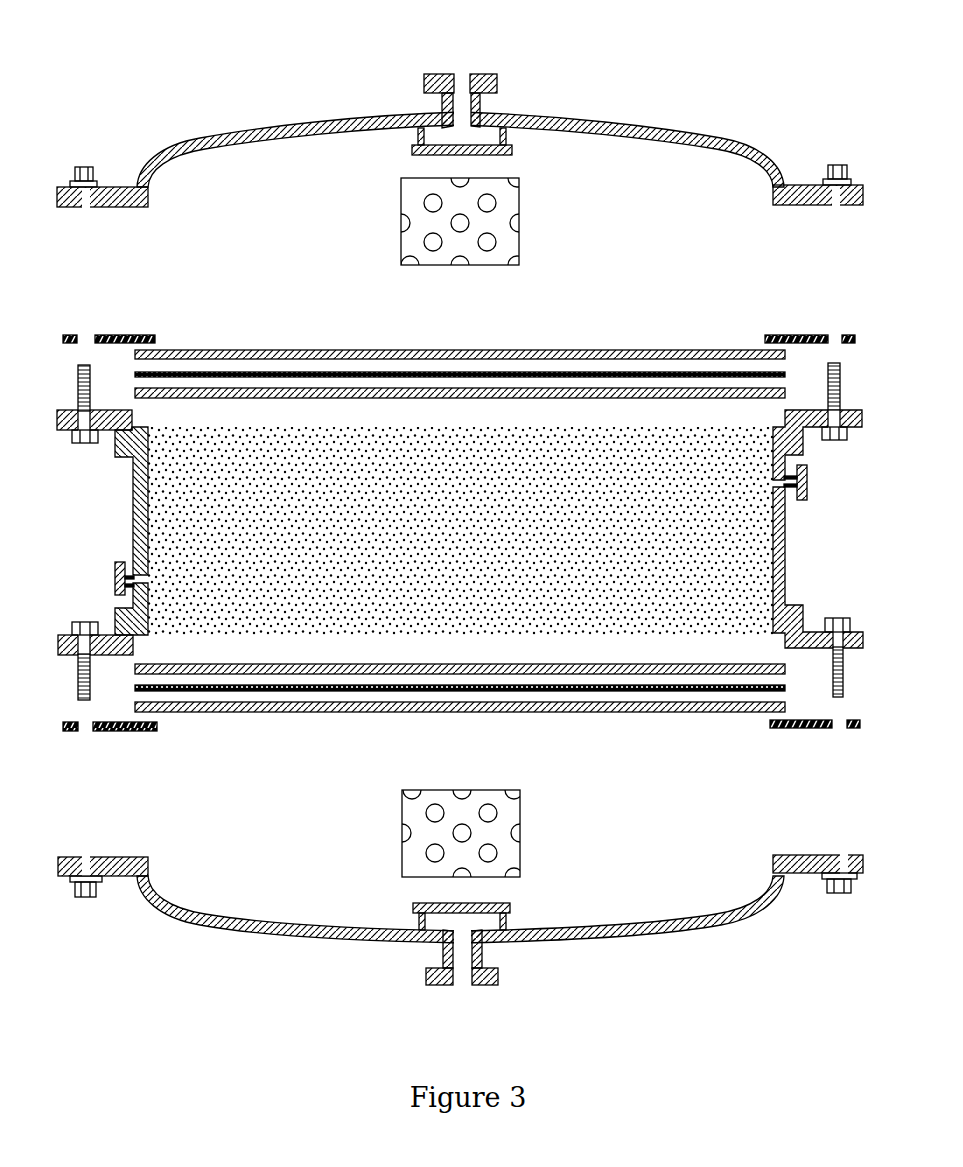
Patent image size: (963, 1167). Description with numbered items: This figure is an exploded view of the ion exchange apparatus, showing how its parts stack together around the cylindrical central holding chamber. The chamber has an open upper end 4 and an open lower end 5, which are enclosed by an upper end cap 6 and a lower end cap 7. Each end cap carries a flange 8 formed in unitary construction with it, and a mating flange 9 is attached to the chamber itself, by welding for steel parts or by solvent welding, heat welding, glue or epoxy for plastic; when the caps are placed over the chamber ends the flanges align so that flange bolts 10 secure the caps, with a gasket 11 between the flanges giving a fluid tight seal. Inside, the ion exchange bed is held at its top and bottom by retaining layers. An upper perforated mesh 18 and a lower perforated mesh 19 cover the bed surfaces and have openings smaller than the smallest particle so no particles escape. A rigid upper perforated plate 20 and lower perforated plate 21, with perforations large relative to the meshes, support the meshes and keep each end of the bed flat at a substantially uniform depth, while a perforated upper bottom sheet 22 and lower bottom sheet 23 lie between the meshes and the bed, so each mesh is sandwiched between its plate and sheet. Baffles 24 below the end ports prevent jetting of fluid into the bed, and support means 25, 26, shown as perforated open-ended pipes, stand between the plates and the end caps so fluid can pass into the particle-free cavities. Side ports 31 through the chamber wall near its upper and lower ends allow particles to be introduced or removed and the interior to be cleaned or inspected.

The open upper end 4 is at (118, 442).
The open lower end 5 is at (118, 622).
The upper end cap 6 is at (555, 113).
The lower end cap 7 is at (250, 930).
The flange member 8 is at (810, 195).
The flange member 9 is at (855, 413).
The flange bolt 10 is at (85, 423).
The gasket 11 is at (105, 333).
The upper perforated mesh 18 is at (600, 374).
The lower perforated mesh 19 is at (583, 688).
The upper perforated plate 20 is at (555, 352).
The lower perforated plate 21 is at (638, 707).
The upper bottom sheet 22 is at (655, 393).
The lower bottom sheet 23 is at (530, 668).
The baffle 24 is at (420, 145).
The upper support means 25 is at (413, 207).
The lower support means 26 is at (418, 852).
The side port 31 is at (118, 565).